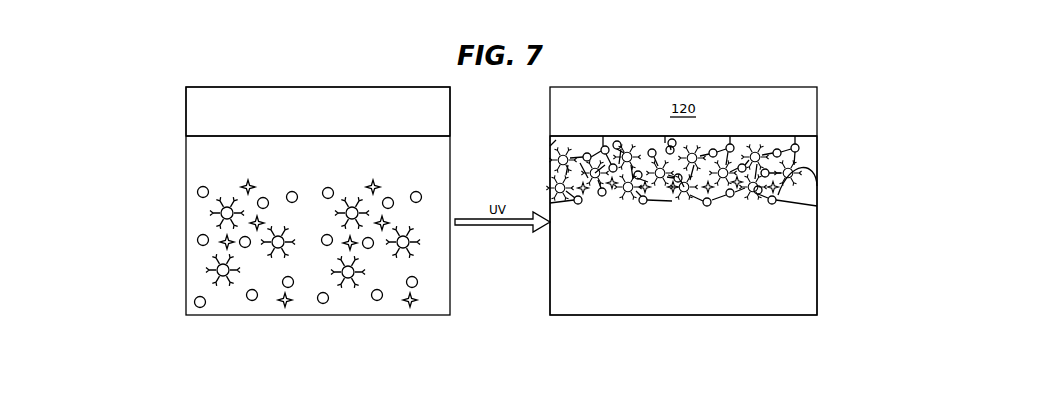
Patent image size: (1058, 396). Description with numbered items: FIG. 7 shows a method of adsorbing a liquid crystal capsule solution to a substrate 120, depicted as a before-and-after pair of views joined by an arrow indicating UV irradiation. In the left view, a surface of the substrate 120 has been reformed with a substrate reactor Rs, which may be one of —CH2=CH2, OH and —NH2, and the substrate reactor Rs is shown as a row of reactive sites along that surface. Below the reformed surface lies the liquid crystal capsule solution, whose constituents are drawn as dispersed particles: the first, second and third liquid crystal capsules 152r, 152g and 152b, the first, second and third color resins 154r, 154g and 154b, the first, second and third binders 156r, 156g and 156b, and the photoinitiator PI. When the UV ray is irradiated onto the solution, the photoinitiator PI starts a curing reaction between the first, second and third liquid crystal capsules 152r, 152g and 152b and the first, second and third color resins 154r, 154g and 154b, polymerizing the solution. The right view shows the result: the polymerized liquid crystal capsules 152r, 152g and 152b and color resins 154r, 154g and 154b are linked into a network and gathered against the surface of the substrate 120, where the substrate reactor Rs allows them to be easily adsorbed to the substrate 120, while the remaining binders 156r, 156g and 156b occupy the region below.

The substrate 120 is at (331, 117).
The substrate reactor Rs is at (238, 136).
The first binder 156r is at (494, 225).
The second binder 156g is at (494, 225).
The third binder 156b is at (196, 170).
The first color resin 154r is at (496, 194).
The second color resin 154g is at (496, 194).
The third color resin 154b is at (197, 241).
The first liquid crystal capsule 152r is at (493, 216).
The second liquid crystal capsule 152g is at (493, 216).
The third liquid crystal capsule 152b is at (208, 272).
The photoinitiator PI is at (412, 309).